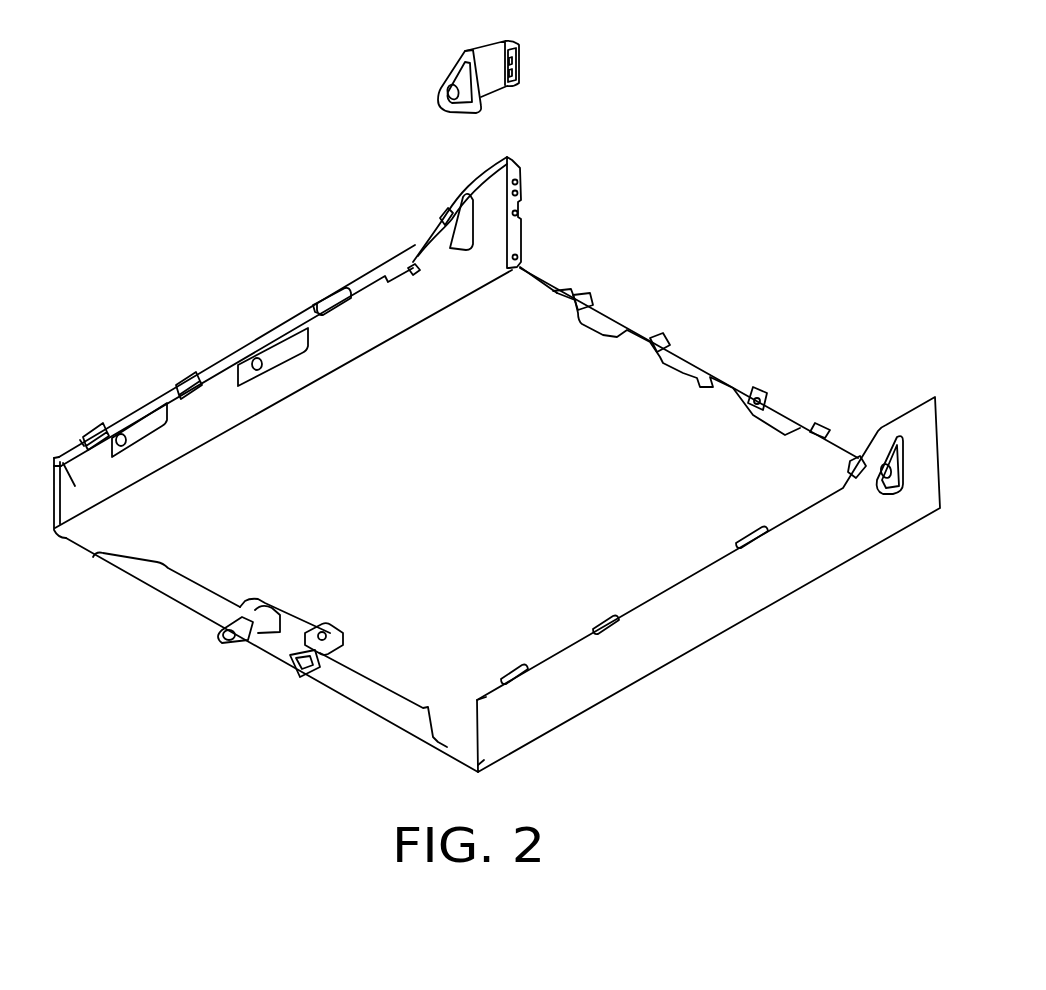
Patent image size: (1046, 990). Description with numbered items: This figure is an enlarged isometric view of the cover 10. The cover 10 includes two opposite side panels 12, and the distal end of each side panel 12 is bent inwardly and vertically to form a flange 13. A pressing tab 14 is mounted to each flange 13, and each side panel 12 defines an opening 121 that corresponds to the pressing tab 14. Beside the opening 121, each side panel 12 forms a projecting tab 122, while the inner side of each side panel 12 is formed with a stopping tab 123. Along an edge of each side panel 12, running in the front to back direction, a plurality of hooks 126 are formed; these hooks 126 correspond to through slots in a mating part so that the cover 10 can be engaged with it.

The cover 10 is at (643, 305).
The side panel 12 is at (663, 643).
The flange 13 is at (521, 186).
The pressing tab 14 is at (455, 65).
The opening 121 is at (455, 233).
The projecting tab 122 is at (447, 211).
The stopping tab 123 is at (415, 270).
The hooks 126 is at (755, 542).